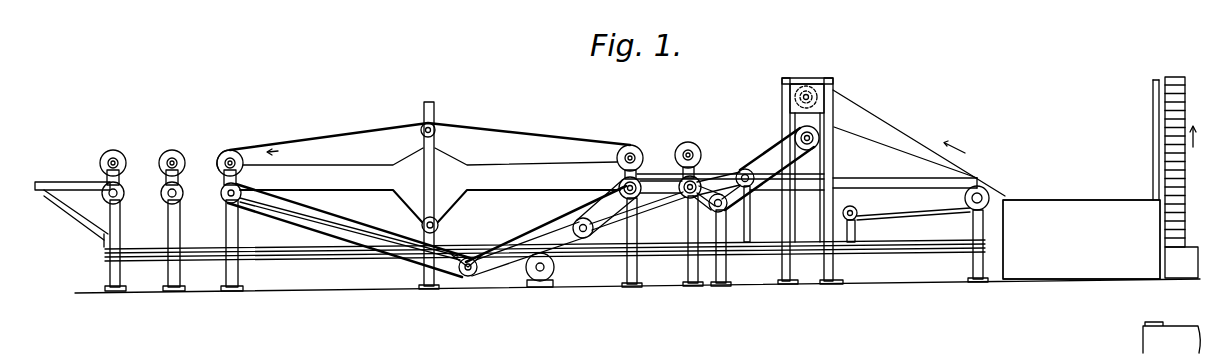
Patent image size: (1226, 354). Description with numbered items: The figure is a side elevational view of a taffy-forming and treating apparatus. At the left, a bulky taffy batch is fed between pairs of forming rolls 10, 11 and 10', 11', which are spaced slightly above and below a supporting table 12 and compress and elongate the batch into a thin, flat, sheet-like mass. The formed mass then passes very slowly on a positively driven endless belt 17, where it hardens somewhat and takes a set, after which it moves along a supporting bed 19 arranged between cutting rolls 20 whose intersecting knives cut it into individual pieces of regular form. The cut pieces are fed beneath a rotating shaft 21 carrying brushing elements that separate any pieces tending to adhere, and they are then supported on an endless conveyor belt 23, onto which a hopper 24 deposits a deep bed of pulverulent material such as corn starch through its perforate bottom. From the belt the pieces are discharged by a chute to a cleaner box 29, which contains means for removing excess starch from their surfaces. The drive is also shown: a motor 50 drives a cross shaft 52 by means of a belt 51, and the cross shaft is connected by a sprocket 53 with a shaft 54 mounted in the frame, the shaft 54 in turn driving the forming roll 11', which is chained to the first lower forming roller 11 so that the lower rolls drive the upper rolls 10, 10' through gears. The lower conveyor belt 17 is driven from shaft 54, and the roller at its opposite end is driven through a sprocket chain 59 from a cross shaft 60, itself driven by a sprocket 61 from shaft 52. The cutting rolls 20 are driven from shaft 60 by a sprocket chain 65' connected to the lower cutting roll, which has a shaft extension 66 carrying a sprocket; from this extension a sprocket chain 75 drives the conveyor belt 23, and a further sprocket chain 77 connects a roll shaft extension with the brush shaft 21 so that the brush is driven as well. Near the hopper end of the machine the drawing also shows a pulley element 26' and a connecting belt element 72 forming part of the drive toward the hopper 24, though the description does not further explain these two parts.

The upper forming roll 10 is at (120, 136).
The upper forming roll 10' is at (179, 148).
The lower forming roll 11 is at (96, 216).
The lower forming roll 11' is at (161, 210).
The supporting table 12 is at (72, 203).
The shaft 54 is at (232, 188).
The endless belt 17 is at (340, 129).
The sprocket 53 is at (420, 262).
The cross shaft 52 is at (468, 277).
The belt 51 is at (496, 272).
The sprocket 61 is at (517, 262).
The motor 50 is at (544, 283).
The cross shaft 60 is at (587, 240).
The sprocket chain 59 is at (617, 195).
The supporting bed 19 is at (656, 176).
The cutting roll 20 is at (705, 170).
The shaft extension 66 is at (683, 191).
The sprocket chain 65' is at (638, 213).
The sprocket chain 75 is at (700, 208).
The rotating shaft 21 is at (743, 172).
The sprocket chain 77 is at (728, 204).
The belt 72 is at (748, 152).
The pulley 26' is at (784, 125).
The hopper 24 is at (830, 90).
The endless conveyor belt 23 is at (898, 222).
The cleaner box 29 is at (1081, 239).